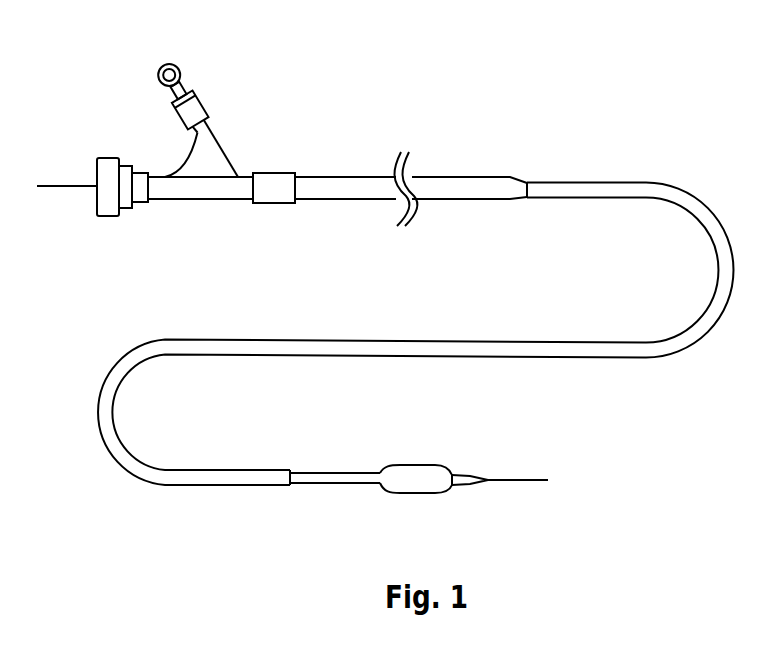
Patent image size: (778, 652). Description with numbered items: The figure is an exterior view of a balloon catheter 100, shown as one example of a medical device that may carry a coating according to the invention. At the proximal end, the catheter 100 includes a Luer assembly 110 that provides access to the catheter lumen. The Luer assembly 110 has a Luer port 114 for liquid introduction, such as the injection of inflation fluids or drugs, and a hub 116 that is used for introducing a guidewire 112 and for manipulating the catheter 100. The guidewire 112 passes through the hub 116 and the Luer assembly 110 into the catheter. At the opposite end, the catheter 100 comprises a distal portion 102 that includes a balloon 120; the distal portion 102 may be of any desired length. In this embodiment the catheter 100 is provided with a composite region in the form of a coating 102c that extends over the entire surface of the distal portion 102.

The balloon catheter 100 is at (598, 102).
The distal portion 102 is at (488, 500).
The coating 102c is at (352, 514).
The Luer assembly 110 is at (190, 200).
The guidewire 112 is at (60, 187).
The Luer port 114 is at (187, 82).
The hub 116 is at (128, 160).
The balloon 120 is at (417, 465).